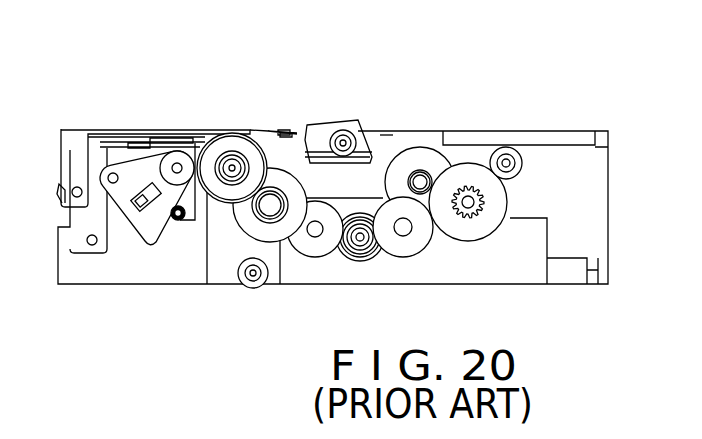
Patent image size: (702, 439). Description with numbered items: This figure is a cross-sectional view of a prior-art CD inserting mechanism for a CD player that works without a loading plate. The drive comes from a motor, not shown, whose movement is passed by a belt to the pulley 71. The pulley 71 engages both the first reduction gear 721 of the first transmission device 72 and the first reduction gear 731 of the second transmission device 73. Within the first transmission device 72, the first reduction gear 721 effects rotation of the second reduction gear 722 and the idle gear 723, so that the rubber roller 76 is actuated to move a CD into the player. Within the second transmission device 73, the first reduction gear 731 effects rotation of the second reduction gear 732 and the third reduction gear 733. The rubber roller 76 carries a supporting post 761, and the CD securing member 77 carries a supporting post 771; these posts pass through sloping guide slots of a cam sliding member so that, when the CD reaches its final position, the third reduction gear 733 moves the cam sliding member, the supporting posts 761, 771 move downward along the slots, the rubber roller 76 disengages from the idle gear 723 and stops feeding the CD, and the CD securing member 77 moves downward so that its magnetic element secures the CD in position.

The pulley 71 is at (373, 260).
The first transmission device 72 is at (259, 268).
The first reduction gear 721 is at (297, 250).
The second reduction gear 722 is at (248, 228).
The idle gear 723 is at (222, 192).
The second transmission device 73 is at (455, 168).
The first reduction gear 731 is at (402, 156).
The second reduction gear 732 is at (418, 150).
The third reduction gear 733 is at (465, 170).
The rubber roller 76 is at (150, 243).
The supporting post 761 is at (178, 220).
The CD securing member 77 is at (170, 129).
The supporting post 771 is at (338, 127).